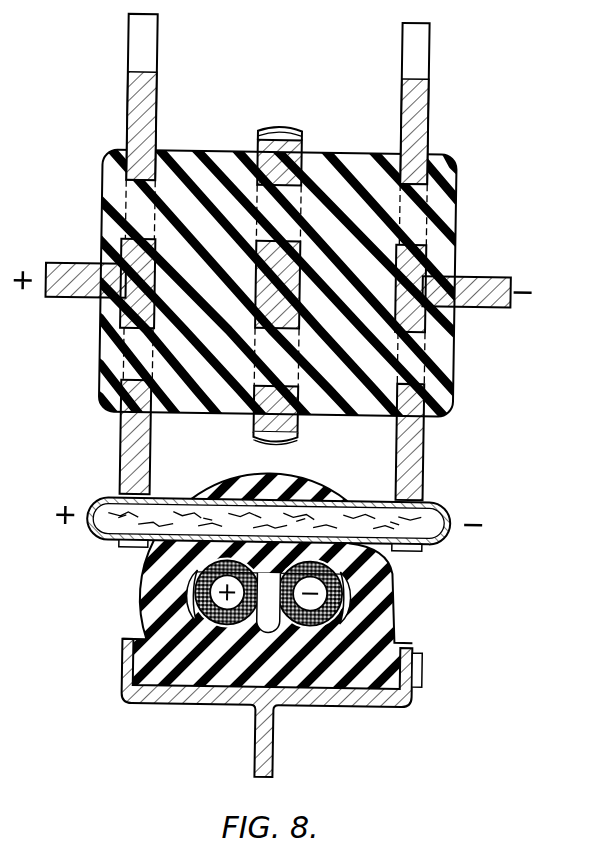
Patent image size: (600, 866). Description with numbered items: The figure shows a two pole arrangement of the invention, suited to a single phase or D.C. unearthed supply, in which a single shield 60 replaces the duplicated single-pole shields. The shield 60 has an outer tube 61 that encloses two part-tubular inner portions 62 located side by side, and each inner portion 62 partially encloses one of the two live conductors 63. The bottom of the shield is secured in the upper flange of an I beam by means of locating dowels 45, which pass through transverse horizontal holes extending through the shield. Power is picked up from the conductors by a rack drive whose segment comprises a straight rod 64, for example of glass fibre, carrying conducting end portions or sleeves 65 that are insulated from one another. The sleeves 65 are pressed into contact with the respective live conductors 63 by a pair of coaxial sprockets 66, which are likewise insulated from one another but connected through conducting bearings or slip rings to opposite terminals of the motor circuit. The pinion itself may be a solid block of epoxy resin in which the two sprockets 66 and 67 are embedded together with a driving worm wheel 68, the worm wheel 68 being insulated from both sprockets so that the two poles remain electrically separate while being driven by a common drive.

The locating dowels 45 is at (428, 660).
The single shield 60 is at (303, 617).
The outer tube 61 is at (391, 581).
The part-tubular inner portions 62 is at (198, 596).
The live conductors 63 is at (285, 574).
The straight rod 64 is at (374, 517).
The conducting end portions or sleeves 65 is at (454, 517).
The coaxial sprockets 66 is at (411, 453).
The sprocket 67 is at (447, 211).
The driving worm wheel 68 is at (289, 439).